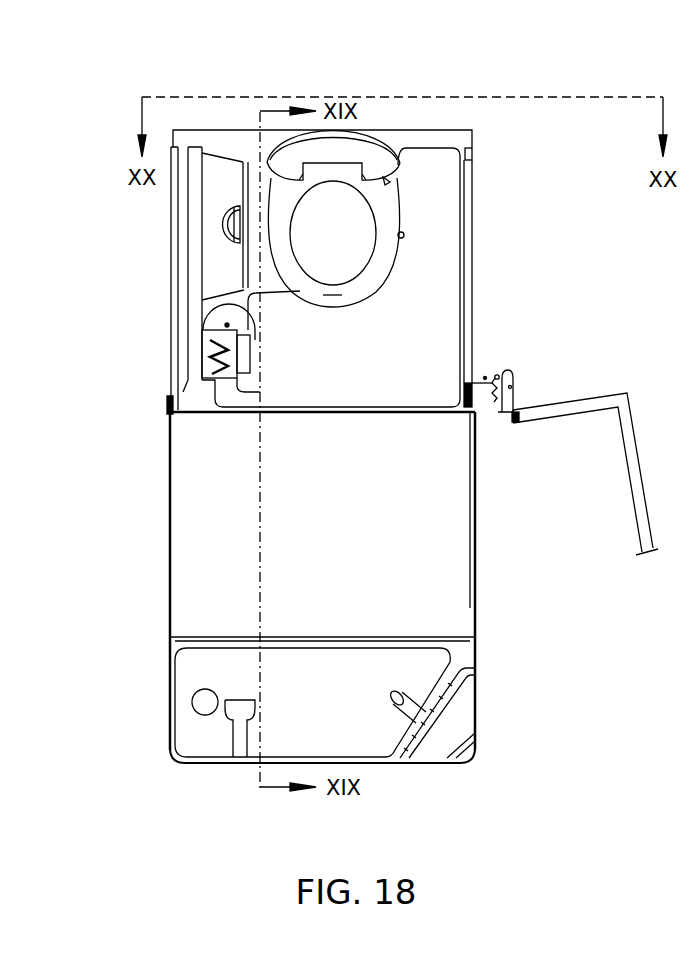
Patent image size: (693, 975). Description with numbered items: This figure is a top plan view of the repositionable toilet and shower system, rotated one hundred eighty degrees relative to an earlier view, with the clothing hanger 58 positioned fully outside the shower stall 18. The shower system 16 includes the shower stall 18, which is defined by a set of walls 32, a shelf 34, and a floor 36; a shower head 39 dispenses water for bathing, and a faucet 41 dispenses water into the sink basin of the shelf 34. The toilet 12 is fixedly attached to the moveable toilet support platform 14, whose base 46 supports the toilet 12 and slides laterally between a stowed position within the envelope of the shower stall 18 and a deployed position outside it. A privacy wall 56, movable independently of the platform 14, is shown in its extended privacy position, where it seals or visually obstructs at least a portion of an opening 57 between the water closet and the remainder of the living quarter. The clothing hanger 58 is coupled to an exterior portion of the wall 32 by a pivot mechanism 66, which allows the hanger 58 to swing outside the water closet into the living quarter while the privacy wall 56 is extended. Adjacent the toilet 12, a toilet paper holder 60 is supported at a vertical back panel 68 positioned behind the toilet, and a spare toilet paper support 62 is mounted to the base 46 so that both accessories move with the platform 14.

The toilet 12 is at (205, 268).
The toilet support platform 14 is at (480, 256).
The shower system 16 is at (502, 632).
The shower stall 18 is at (140, 480).
The walls 32 is at (169, 570).
The shelf 34 is at (304, 715).
The floor 36 is at (301, 527).
The shower head 39 is at (240, 704).
The faucet 41 is at (397, 691).
The base 46 is at (407, 348).
The privacy wall 56 is at (462, 195).
The opening 57 is at (484, 142).
The clothing hanger 58 is at (603, 397).
The toilet paper holder 60 is at (260, 392).
The spare toilet paper support 62 is at (228, 325).
The pivot mechanism 66 is at (517, 360).
The back panel 68 is at (191, 334).